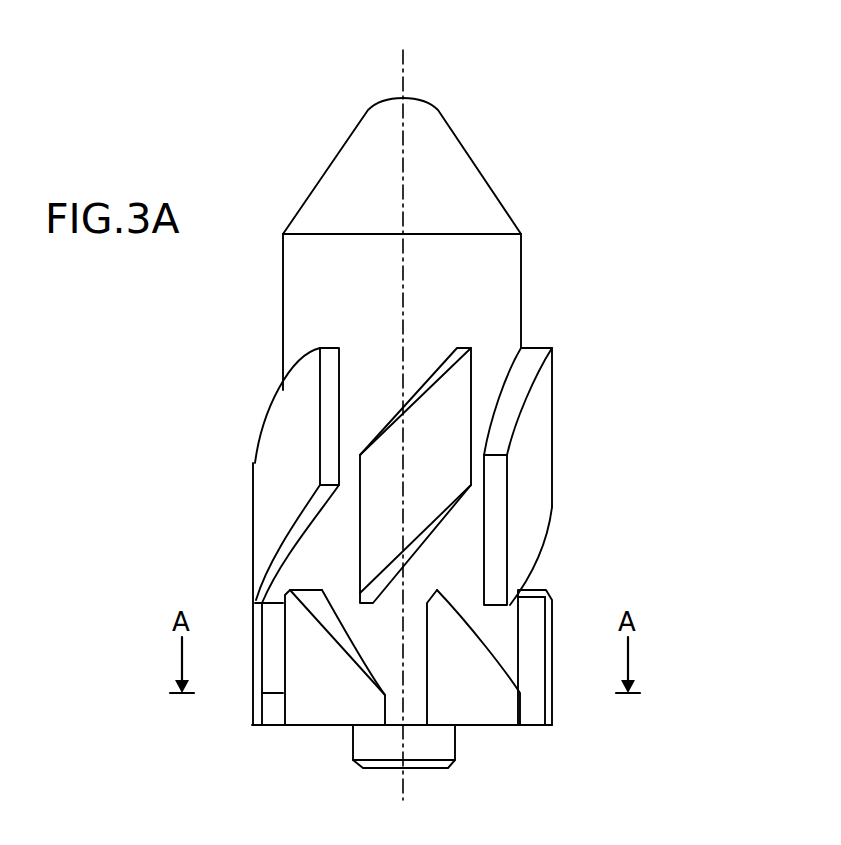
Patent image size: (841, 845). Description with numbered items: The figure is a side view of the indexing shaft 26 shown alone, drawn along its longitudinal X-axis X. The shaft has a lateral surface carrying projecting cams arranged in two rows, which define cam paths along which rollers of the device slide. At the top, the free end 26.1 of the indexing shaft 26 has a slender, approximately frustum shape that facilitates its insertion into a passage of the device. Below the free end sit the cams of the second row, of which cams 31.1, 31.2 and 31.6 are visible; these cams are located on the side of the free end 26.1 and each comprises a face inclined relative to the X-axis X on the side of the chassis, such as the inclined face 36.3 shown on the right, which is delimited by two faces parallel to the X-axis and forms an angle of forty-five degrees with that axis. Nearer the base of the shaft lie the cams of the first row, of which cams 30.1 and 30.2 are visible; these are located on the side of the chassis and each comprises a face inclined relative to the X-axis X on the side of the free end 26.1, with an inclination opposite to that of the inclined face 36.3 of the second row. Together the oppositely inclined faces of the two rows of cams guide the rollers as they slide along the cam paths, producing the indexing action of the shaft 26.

The X-axis X is at (403, 66).
The indexing shaft 26 is at (560, 245).
The free end 26.1 is at (438, 137).
The cam 31.1 is at (455, 393).
The cam 31.2 is at (540, 436).
The cam 31.6 is at (280, 422).
The cam 30.1 is at (315, 712).
The cam 30.2 is at (483, 712).
The inclined face 36.3 is at (547, 617).